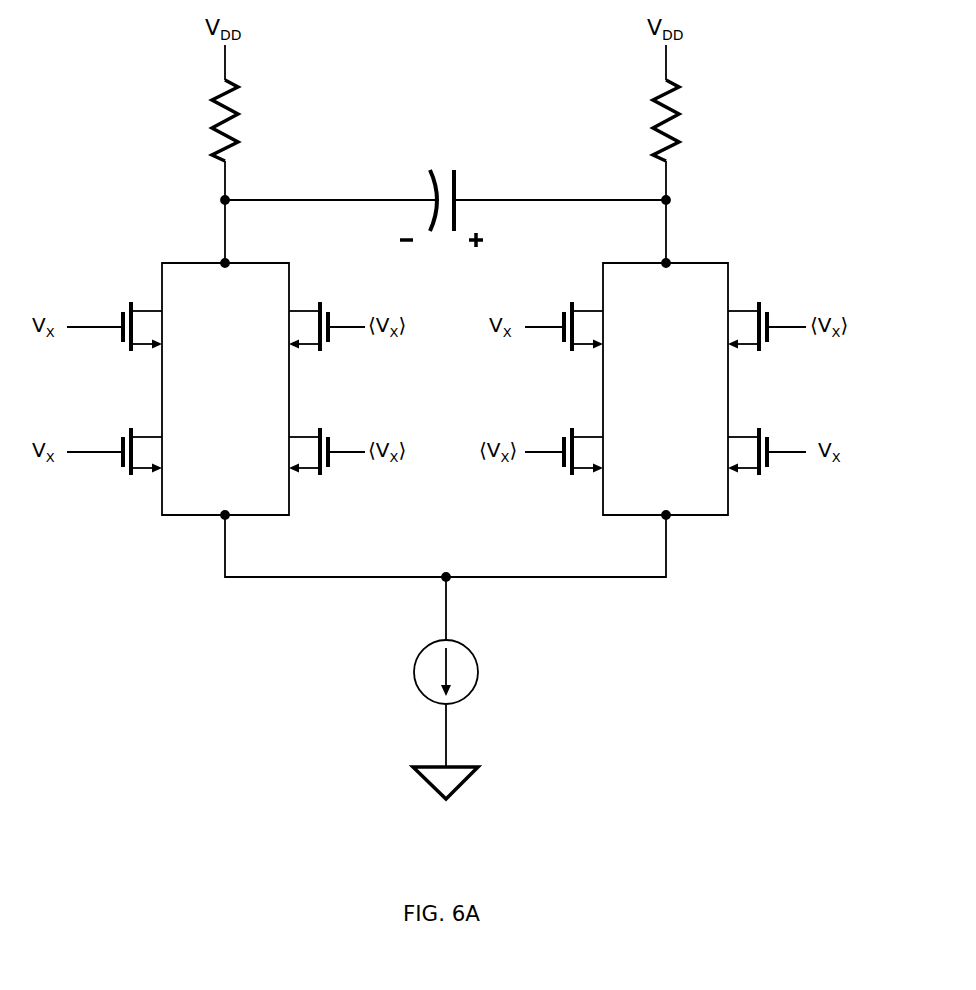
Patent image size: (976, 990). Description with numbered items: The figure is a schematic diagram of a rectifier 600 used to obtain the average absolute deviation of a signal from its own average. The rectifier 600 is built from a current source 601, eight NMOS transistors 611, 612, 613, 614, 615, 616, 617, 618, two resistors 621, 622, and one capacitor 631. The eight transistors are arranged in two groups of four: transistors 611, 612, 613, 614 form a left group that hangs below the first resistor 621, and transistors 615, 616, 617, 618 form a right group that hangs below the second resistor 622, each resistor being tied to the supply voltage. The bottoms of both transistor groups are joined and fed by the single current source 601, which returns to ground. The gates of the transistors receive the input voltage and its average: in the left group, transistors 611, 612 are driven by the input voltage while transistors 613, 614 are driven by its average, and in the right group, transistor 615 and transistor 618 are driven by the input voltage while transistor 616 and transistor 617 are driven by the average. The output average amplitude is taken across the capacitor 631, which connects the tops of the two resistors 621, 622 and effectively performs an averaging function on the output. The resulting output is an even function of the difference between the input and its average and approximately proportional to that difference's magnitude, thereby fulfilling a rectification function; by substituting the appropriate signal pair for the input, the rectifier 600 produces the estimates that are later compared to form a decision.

The rectifier 600 is at (191, 736).
The current source 601 is at (416, 674).
The NMOS transistor 611 is at (149, 312).
The NMOS transistor 612 is at (149, 438).
The NMOS transistor 613 is at (301, 312).
The NMOS transistor 614 is at (301, 438).
The NMOS transistor 615 is at (590, 312).
The NMOS transistor 616 is at (590, 438).
The NMOS transistor 617 is at (741, 312).
The NMOS transistor 618 is at (741, 438).
The resistor 621 is at (213, 130).
The resistor 622 is at (653, 130).
The capacitor 631 is at (474, 172).